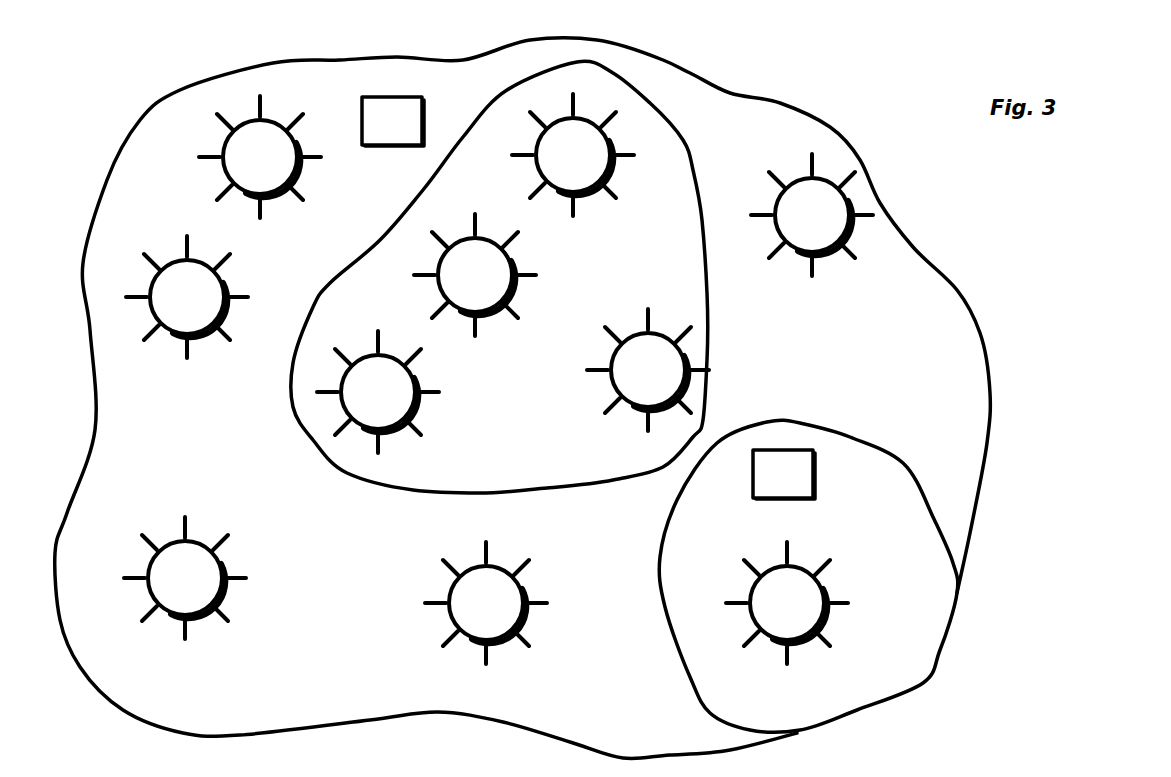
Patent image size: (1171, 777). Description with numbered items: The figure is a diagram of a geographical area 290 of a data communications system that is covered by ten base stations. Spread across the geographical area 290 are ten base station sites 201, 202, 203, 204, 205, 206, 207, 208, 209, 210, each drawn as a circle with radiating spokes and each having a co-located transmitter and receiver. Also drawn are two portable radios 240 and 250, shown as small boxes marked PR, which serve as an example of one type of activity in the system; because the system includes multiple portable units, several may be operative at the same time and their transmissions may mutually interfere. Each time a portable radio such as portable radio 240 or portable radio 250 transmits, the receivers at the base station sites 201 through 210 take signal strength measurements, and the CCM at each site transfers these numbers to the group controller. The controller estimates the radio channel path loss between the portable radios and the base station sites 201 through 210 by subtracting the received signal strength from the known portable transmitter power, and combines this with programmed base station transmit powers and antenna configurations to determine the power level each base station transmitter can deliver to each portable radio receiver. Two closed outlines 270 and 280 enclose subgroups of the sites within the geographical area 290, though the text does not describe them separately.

The base station site 201 is at (224, 170).
The base station site 202 is at (538, 168).
The base station site 203 is at (510, 257).
The base station site 204 is at (222, 283).
The base station site 205 is at (776, 232).
The base station site 206 is at (413, 380).
The base station site 207 is at (220, 567).
The base station site 208 is at (612, 385).
The base station site 209 is at (448, 609).
The base station site 210 is at (827, 594).
The portable radio 240 is at (816, 481).
The portable radio 250 is at (412, 98).
The subnetwork region boundary 270 is at (710, 350).
The subnetwork region boundary 280 is at (867, 432).
The geographical area 290 is at (95, 395).